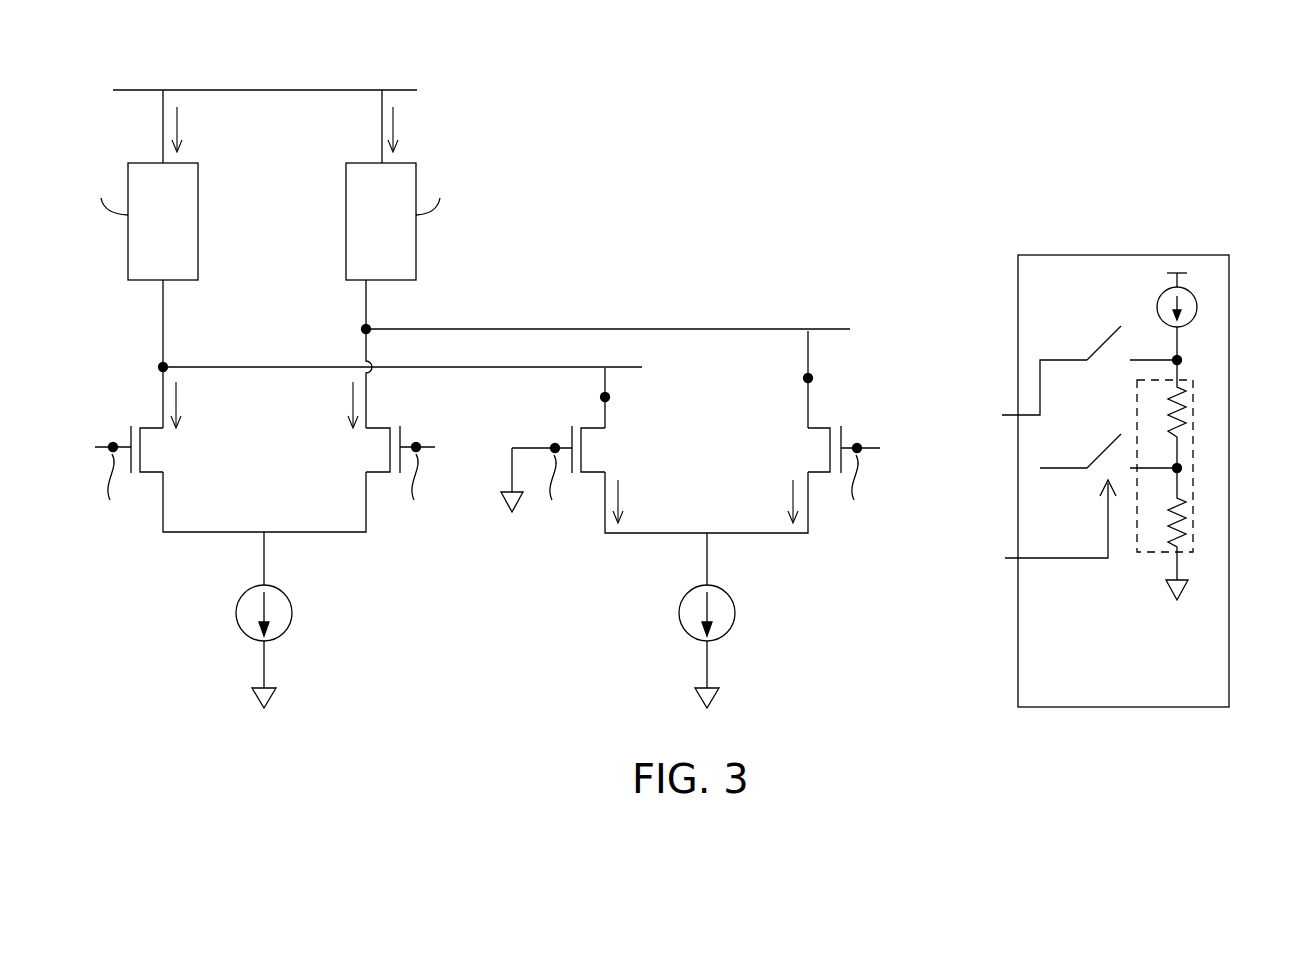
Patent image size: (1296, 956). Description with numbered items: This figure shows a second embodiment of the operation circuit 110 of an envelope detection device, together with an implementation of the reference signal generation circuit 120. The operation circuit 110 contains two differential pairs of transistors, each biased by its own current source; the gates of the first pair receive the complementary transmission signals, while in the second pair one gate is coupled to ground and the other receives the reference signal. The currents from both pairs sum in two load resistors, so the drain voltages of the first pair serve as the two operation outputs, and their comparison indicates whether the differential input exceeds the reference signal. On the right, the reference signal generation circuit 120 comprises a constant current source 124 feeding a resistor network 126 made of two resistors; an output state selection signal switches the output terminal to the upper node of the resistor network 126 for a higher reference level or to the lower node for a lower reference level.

The operation circuit 110 is at (1022, 106).
The reference signal generation circuit 120 is at (1202, 255).
The constant current source 124 is at (1192, 290).
The resistor network 126 is at (1186, 378).